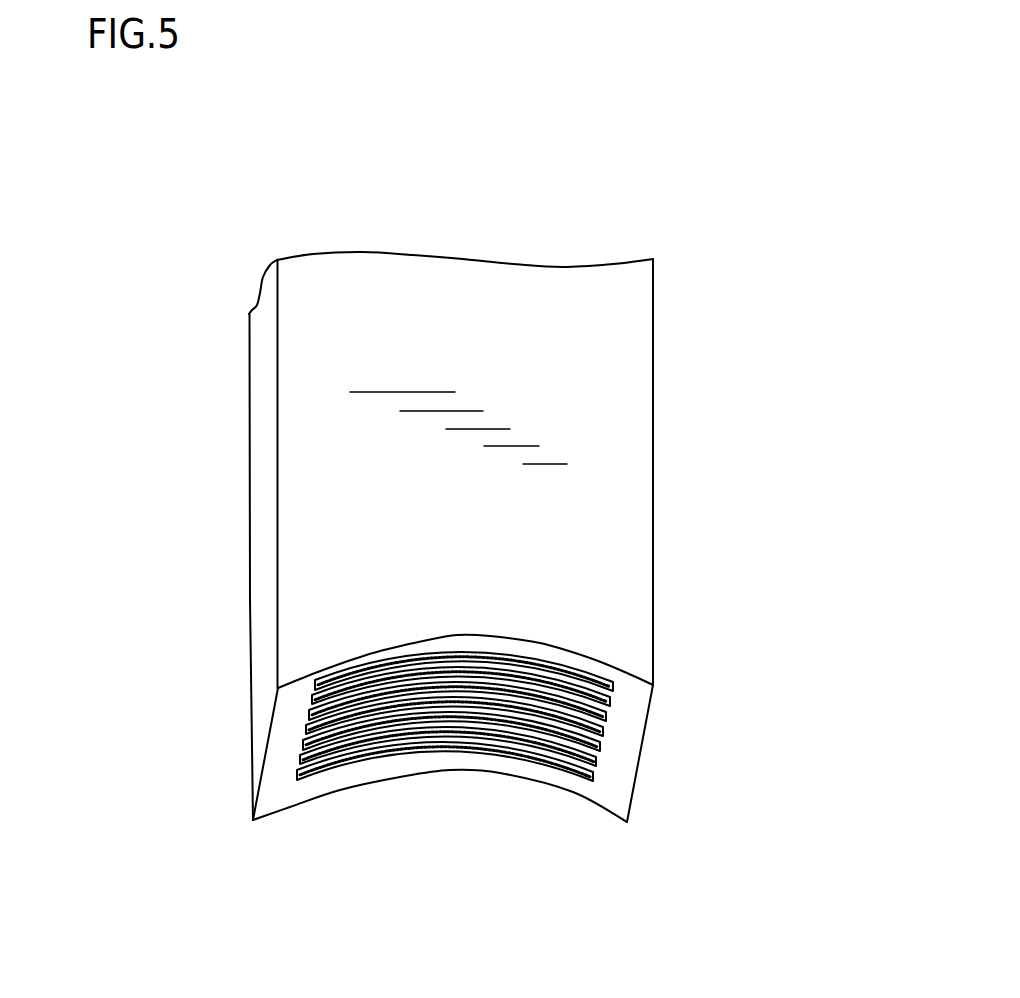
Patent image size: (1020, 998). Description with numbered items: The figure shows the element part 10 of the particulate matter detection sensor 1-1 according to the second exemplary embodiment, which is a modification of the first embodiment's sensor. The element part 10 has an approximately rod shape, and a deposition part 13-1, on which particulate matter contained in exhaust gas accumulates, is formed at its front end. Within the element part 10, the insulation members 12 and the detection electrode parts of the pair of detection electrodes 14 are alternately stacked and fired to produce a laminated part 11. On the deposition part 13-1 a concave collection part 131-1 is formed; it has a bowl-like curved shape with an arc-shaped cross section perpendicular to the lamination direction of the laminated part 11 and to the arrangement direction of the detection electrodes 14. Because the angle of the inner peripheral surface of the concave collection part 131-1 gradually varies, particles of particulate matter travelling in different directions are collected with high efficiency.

The element part 10 is at (655, 230).
The particulate matter detection sensor 1-1 is at (444, 524).
The laminated part 11 is at (250, 838).
The insulation member 12 is at (277, 782).
The deposition part 13-1 is at (283, 823).
The concave collection part 131-1 is at (323, 805).
The detection electrodes 14 is at (340, 727).